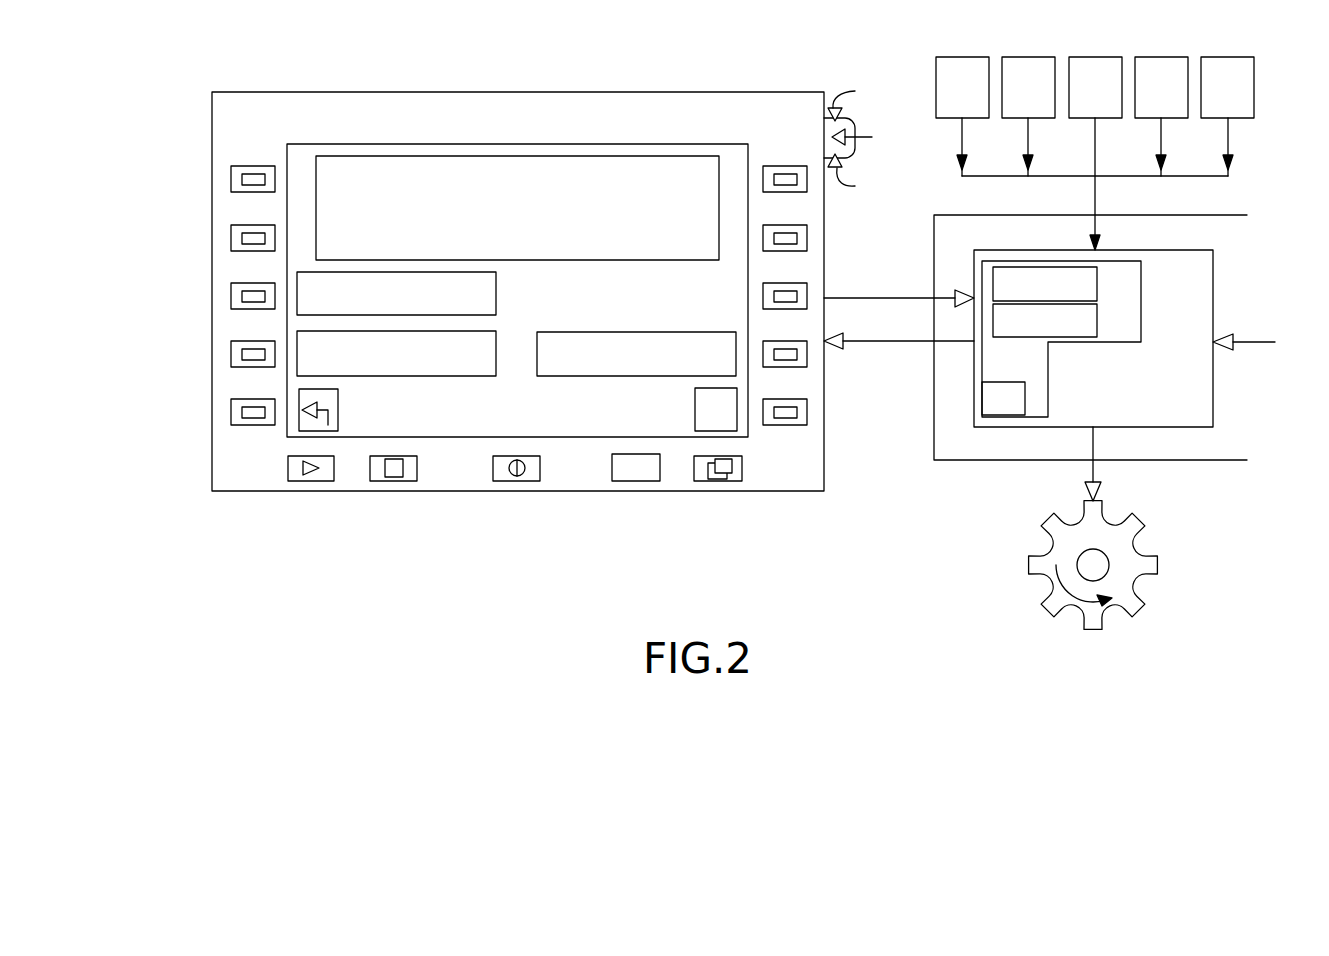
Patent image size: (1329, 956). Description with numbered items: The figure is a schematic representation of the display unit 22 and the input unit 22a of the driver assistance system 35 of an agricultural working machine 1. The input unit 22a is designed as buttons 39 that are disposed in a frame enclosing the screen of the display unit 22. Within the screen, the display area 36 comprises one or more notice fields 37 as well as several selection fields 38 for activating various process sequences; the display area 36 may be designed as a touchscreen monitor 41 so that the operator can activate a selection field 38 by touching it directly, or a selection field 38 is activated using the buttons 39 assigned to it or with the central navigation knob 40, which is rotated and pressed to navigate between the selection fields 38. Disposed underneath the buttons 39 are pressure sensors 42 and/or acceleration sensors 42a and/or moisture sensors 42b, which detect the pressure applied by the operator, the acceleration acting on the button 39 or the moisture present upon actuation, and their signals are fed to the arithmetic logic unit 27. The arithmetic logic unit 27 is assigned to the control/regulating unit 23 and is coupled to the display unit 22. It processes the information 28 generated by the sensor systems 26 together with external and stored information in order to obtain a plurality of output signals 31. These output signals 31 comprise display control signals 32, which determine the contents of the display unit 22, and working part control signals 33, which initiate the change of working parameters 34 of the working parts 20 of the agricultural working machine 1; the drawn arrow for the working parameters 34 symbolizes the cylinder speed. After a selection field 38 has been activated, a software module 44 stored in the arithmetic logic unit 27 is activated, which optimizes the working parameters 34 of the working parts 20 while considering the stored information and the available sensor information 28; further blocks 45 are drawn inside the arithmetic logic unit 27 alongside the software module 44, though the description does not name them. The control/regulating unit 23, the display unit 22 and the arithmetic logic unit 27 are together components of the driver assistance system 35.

The agricultural working machine 1 is at (890, 515).
The working parts 20 is at (1132, 547).
The display unit 22 is at (529, 335).
The input unit 22a is at (736, 503).
The control/regulating unit 23 is at (973, 448).
The sensor systems 26 is at (976, 97).
The arithmetic logic unit 27 is at (1130, 383).
The information 28 is at (962, 132).
The output signals 31 is at (1033, 375).
The display control signals 32 is at (905, 338).
The working part control signals 33 is at (1095, 472).
The working parameters 34 is at (1052, 588).
The driver assistance system 35 is at (948, 528).
The display area 36 is at (733, 170).
The notice fields 37 is at (346, 172).
The selection fields 38 is at (445, 300).
The buttons 39 is at (231, 178).
The central navigation knob 40 is at (843, 123).
The touchscreen monitor 41 is at (607, 305).
The pressure sensors 42 is at (496, 289).
The acceleration sensors 42a is at (496, 289).
The moisture sensors 42b is at (250, 176).
The software module 44 is at (1058, 296).
The memory unit 45 is at (1058, 332).